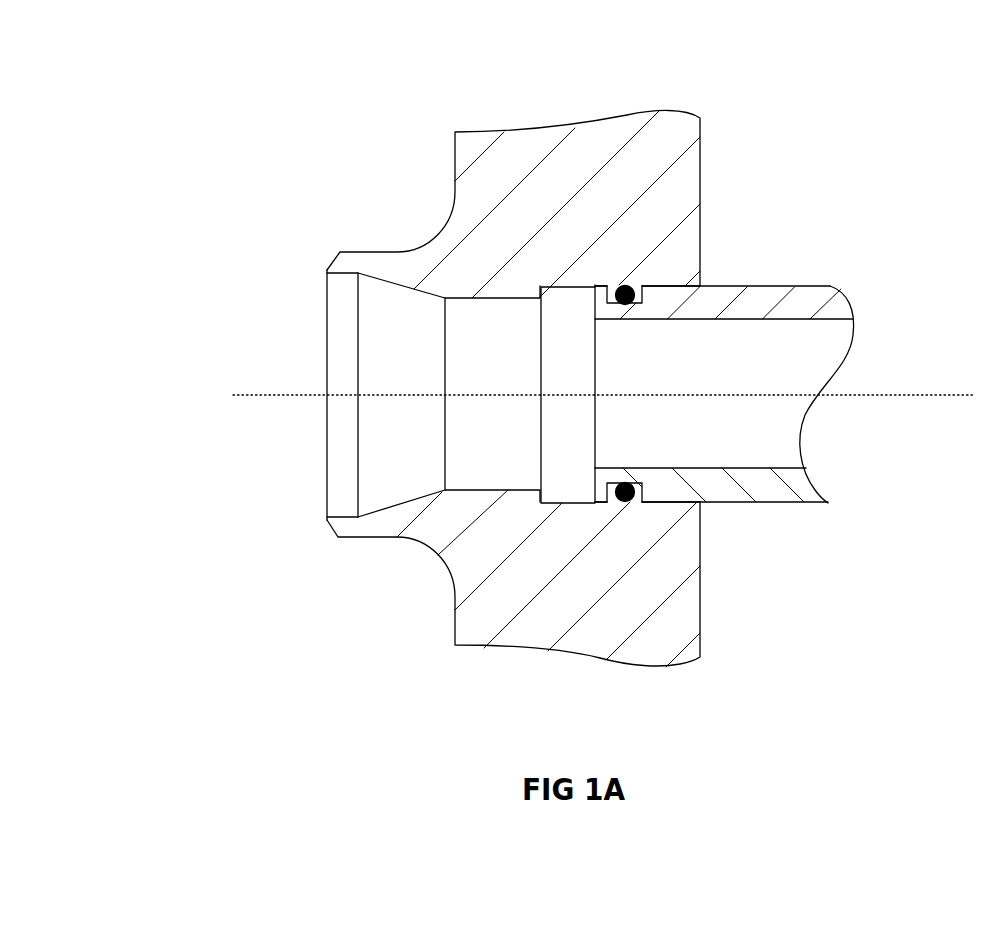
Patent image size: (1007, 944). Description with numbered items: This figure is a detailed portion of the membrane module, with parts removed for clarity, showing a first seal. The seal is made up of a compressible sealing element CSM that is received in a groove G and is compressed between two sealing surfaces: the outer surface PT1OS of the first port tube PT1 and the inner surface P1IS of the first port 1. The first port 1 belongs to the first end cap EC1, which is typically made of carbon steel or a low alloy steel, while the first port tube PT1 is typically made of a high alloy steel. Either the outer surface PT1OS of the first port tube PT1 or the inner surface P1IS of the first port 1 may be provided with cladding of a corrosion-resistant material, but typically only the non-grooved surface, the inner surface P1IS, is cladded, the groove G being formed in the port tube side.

The first port 1 is at (393, 360).
The first end cap EC1 is at (557, 183).
The inner surface of the first port P1IS is at (567, 292).
The groove G is at (607, 287).
The first port tube PT1 is at (787, 302).
The outer surface of the first port tube PT1OS is at (730, 285).
The compression seal member (O-ring) CSM is at (625, 288).